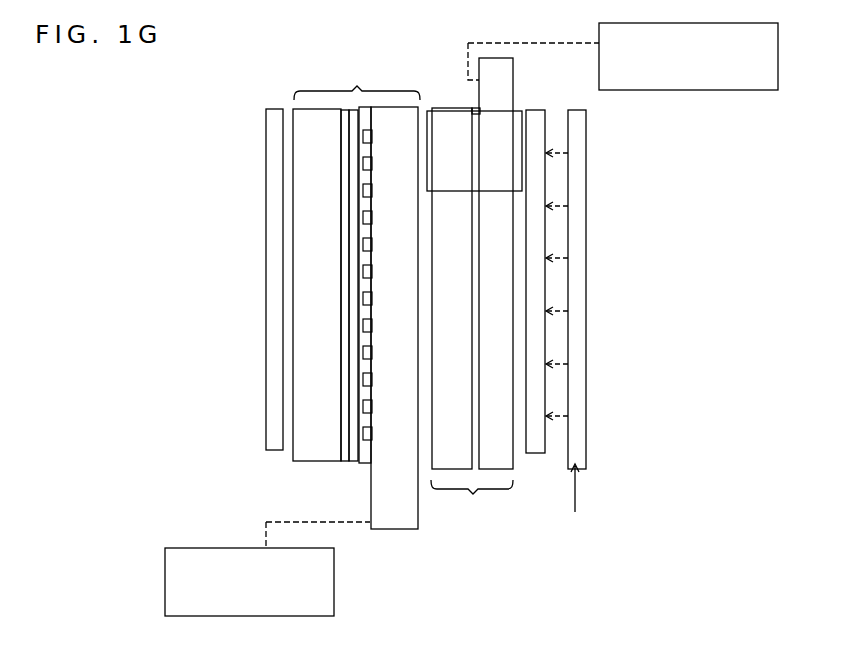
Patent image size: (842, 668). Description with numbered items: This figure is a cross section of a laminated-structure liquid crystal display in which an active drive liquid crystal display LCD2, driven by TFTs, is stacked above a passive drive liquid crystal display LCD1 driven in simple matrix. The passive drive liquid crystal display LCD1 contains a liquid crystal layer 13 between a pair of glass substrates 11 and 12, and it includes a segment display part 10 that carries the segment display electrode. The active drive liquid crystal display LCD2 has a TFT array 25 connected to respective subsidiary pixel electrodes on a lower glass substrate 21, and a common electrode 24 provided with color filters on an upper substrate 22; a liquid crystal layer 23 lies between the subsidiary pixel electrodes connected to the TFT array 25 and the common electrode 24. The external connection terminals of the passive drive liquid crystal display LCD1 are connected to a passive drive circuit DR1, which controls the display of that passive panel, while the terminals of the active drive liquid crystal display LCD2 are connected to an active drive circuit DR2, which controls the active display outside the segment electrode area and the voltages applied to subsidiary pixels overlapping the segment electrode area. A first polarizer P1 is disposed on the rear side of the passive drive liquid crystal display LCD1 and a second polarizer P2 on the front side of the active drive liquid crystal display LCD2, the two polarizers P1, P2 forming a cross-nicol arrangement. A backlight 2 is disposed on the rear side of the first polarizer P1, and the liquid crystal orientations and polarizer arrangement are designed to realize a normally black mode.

The backlight 2 is at (586, 290).
The segment display part 10 is at (517, 110).
The glass substrate 11 is at (503, 73).
The glass substrate 12 is at (453, 108).
The liquid crystal layer 13 is at (472, 108).
The lower glass substrate 21 is at (390, 533).
The upper substrate 22 is at (301, 462).
The liquid crystal layer 23 is at (352, 462).
The common electrode 24 is at (343, 462).
The TFT array 25 is at (364, 464).
The first polarizer P1 is at (540, 109).
The second polarizer P2 is at (277, 108).
The passive drive liquid crystal display LCD1 is at (472, 502).
The active drive liquid crystal display LCD2 is at (357, 79).
The passive drive circuit DR1 is at (690, 92).
The active drive circuit DR2 is at (165, 580).